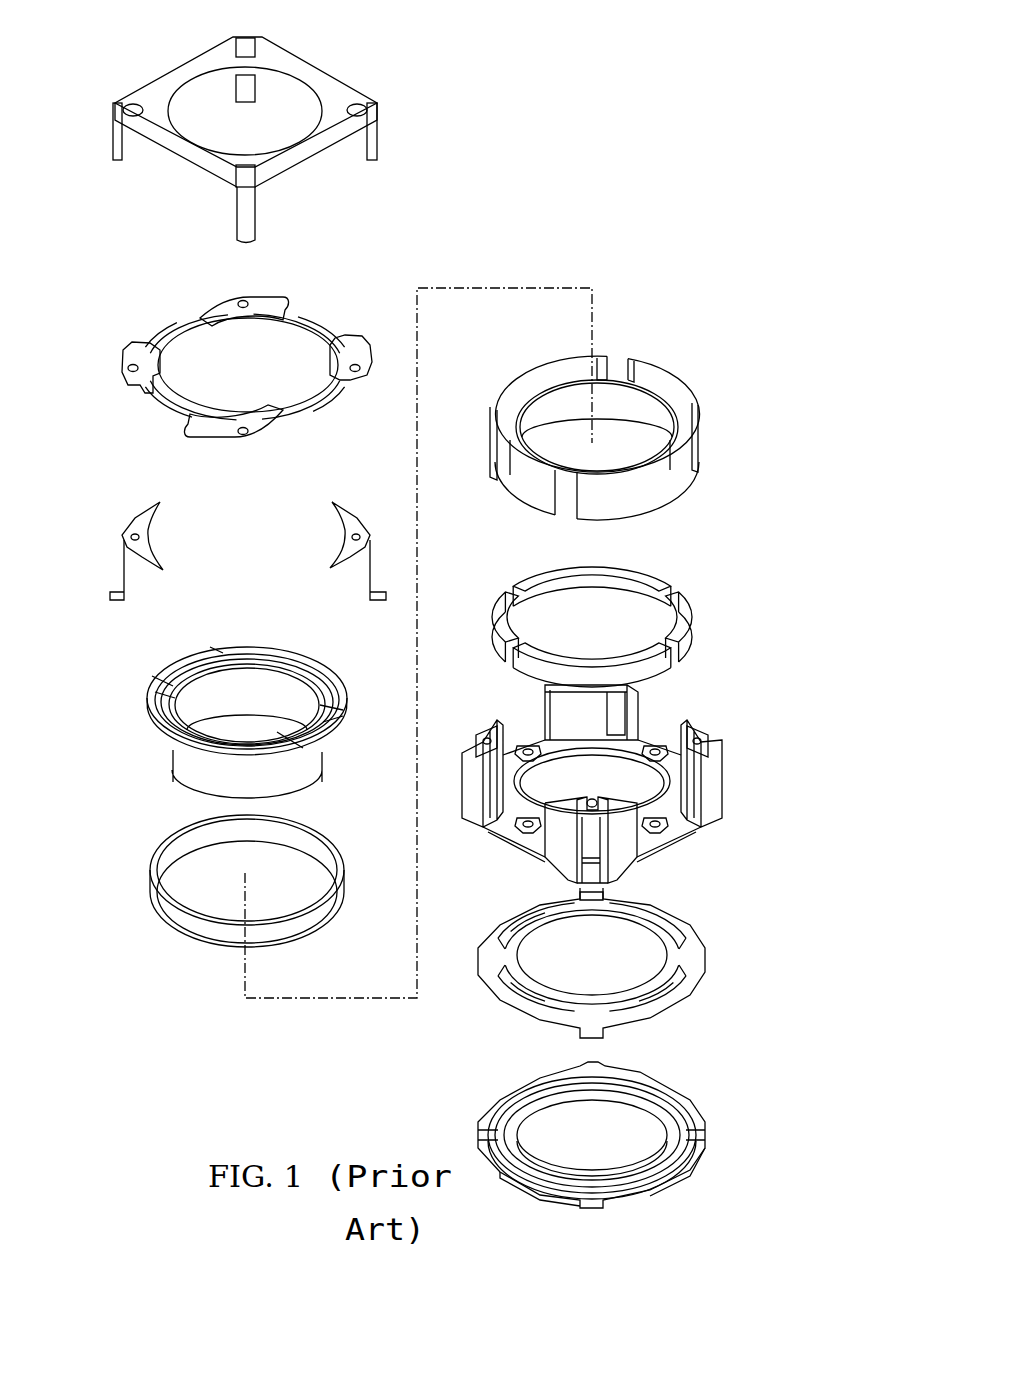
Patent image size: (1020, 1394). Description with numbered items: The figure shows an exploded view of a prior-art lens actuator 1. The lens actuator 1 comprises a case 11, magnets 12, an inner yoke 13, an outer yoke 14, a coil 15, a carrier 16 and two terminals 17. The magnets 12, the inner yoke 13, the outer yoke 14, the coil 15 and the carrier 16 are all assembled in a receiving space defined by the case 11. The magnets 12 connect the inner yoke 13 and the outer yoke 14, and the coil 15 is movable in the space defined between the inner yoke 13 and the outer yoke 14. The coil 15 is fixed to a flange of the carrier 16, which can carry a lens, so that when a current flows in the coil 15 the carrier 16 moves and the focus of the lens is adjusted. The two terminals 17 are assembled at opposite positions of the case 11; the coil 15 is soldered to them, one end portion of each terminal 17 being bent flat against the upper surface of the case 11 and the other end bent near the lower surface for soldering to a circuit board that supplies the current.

The lens actuator 1 is at (558, 76).
The case 11 is at (725, 793).
The magnets 12 is at (628, 558).
The inner yoke 13 is at (618, 382).
The outer yoke 14 is at (665, 378).
The coil 15 is at (155, 907).
The carrier 16 is at (182, 757).
The terminals 17 is at (140, 507).